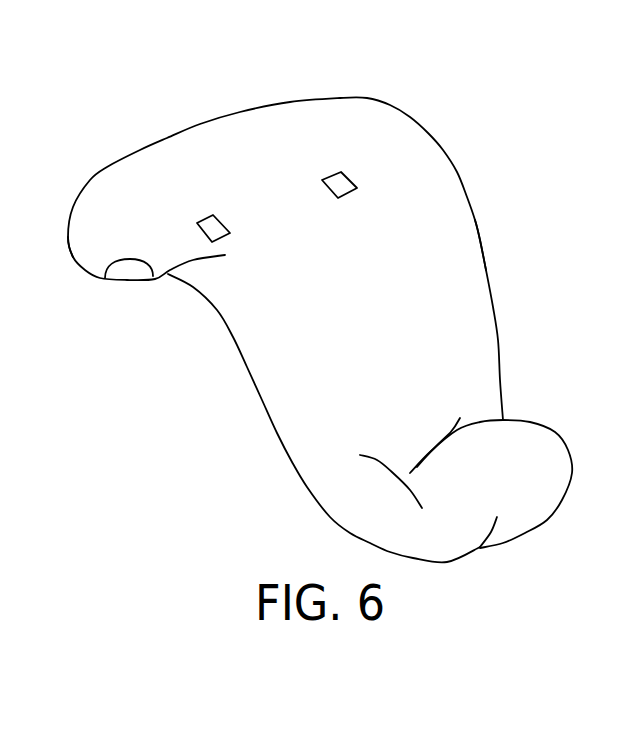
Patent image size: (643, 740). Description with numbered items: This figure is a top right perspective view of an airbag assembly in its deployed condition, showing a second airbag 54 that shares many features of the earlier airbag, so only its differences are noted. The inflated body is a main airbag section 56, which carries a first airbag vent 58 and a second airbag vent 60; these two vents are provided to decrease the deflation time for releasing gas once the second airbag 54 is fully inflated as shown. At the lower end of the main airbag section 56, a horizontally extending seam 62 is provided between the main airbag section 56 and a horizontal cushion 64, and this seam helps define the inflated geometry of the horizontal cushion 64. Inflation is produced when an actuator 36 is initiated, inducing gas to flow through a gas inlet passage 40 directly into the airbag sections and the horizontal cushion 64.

The second airbag 54 is at (457, 125).
The main airbag section 56 is at (450, 270).
The first airbag vent 58 is at (201, 223).
The second airbag vent 60 is at (327, 173).
The actuator 36 is at (128, 270).
The gas inlet passage 40 is at (87, 273).
The seam 62 is at (417, 467).
The horizontal cushion 64 is at (537, 467).